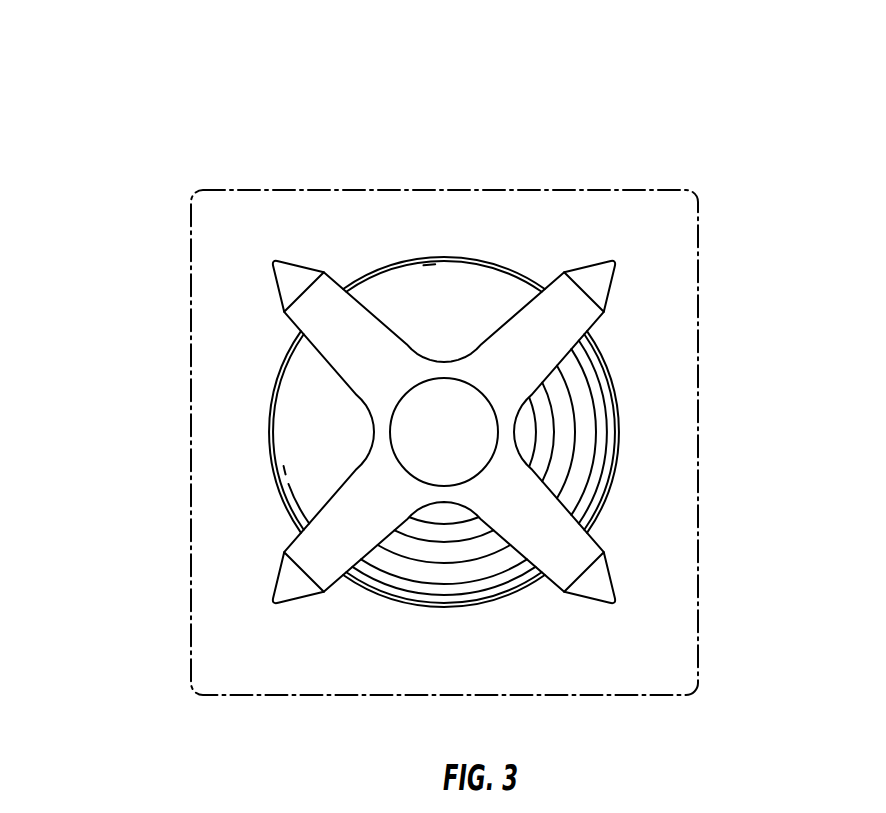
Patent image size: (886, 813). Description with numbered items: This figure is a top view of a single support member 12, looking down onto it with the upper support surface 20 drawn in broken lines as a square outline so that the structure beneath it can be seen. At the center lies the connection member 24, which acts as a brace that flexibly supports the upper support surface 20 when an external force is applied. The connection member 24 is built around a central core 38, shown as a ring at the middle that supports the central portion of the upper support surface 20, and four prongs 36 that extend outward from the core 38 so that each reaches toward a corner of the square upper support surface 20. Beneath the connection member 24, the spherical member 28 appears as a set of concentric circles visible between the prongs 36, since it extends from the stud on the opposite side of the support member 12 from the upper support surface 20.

The support member 12 is at (417, 382).
The upper support surface 20 is at (382, 442).
The connection member 24 is at (354, 432).
The spherical member 28 is at (518, 432).
The prongs 36 is at (482, 423).
The central core 38 is at (428, 309).